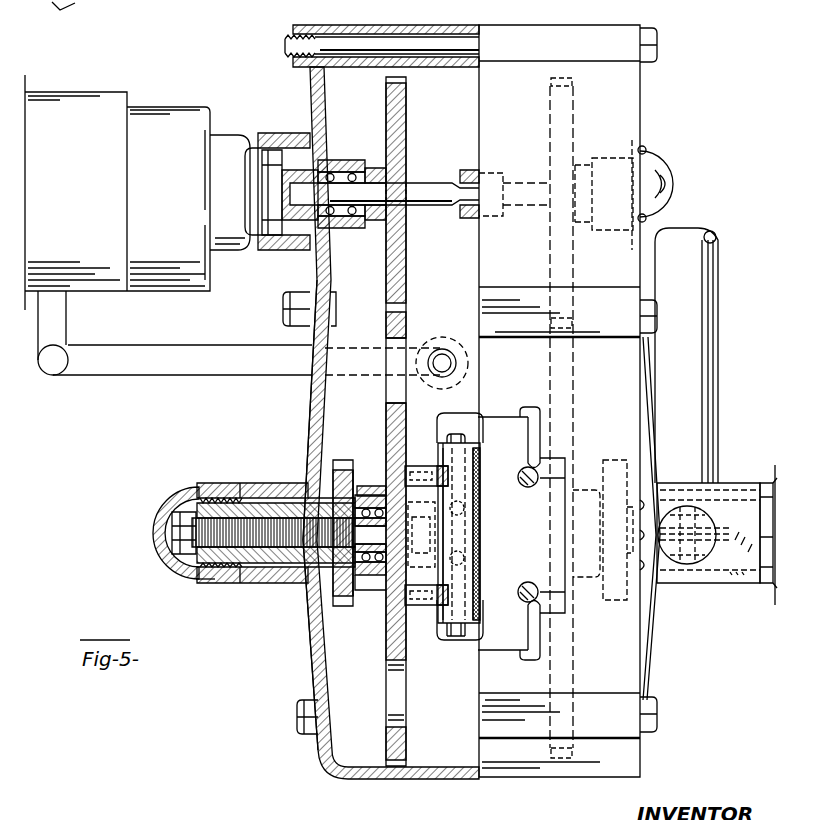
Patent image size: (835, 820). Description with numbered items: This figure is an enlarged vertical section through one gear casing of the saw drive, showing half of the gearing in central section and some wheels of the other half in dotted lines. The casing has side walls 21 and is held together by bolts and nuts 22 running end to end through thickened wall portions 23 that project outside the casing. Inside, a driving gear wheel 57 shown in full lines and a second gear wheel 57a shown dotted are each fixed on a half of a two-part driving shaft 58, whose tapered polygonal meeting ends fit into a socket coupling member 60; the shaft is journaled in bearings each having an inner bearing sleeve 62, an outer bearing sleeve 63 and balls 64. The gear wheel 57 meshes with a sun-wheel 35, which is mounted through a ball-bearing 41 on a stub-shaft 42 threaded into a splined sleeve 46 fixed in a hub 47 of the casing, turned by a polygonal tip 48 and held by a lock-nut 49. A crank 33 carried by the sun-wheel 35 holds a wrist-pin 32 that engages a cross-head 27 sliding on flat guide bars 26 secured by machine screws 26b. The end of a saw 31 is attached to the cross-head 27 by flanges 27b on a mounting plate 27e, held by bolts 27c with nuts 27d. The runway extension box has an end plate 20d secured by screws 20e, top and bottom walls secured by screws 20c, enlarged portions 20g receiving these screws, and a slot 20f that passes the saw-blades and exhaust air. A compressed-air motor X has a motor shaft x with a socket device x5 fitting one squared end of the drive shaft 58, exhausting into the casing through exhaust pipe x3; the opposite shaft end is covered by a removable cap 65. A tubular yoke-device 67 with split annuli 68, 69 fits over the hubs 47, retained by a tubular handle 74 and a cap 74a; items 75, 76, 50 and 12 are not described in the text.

The side walls 21 is at (612, 132).
The thickened wall portions 23 is at (395, 30).
The bolts and nuts 22 is at (332, 48).
The gear wheel 57 is at (405, 157).
The gear wheel 57a is at (560, 142).
The sun-wheel 35 is at (384, 420).
The driving shaft 58 is at (423, 193).
The socket coupling member 60 is at (467, 213).
The inner bearing sleeve 62 is at (347, 232).
The outer bearing sleeve 63 is at (345, 165).
The balls 64 is at (364, 168).
The cap 65 is at (665, 190).
The yoke-device 67 is at (688, 418).
The split annulus 69 is at (693, 577).
The tubular handle 74 is at (770, 577).
The cap 74a is at (153, 519).
The neck 75 is at (232, 157).
The boss 76 is at (308, 84).
The motor X is at (150, 118).
The motor shaft x is at (282, 172).
The socket device x5 is at (293, 213).
The exhaust pipe x3 is at (203, 367).
The flanges 27b is at (693, 8).
The wall 50 is at (318, 478).
The splined sleeve 46 is at (282, 487).
The split annulus 68 is at (257, 491).
The polygonal tip 48 is at (178, 545).
The lock-nut 49 is at (196, 578).
The hub 47 is at (291, 586).
The section line 12 is at (263, 478).
The ball-bearing 41 is at (372, 560).
The stub-shaft 42 is at (373, 575).
The crank 33 is at (383, 600).
The machine screws 26b is at (387, 458).
The bars 26 is at (443, 470).
The cross-head 27 is at (462, 471).
The bolts 27c is at (460, 437).
The nut 27d is at (455, 641).
The mounting plate 27e is at (467, 490).
The wrist-pin 32 is at (445, 535).
The saw 31 is at (477, 533).
The slot 20f is at (480, 563).
The end plate 20d is at (506, 630).
The screws 20c is at (540, 408).
The enlarged portions 20g is at (537, 442).
The screws 20e is at (542, 473).